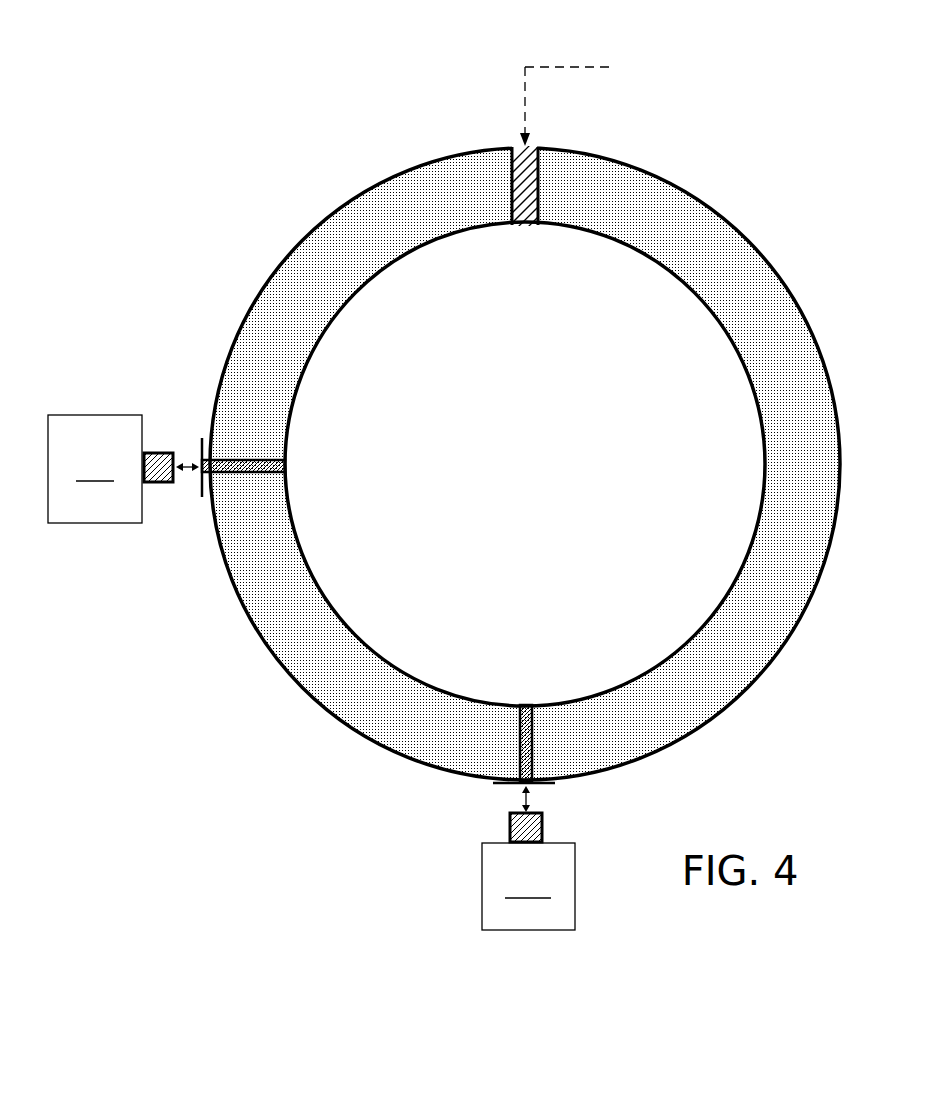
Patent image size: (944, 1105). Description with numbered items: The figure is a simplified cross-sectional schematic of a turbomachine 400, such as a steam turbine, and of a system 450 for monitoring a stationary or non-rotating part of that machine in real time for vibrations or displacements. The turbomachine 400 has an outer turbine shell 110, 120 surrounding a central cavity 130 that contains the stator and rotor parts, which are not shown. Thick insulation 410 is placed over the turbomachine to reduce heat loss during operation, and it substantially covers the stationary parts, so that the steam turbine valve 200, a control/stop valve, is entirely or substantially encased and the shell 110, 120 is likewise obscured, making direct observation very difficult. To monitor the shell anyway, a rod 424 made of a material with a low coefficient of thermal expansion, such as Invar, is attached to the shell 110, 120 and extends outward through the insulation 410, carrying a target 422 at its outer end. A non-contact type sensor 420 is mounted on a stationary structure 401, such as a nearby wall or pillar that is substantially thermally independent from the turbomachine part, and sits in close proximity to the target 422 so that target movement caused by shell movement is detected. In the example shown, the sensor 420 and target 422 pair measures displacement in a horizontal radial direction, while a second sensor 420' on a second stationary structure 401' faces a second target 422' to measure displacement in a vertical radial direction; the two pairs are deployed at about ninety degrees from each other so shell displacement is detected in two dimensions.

The turbomachine 400 is at (695, 123).
The insulation 410 is at (288, 290).
The turbine shell 110 is at (668, 268).
The turbine shell 120 is at (373, 655).
The central cavity 130 is at (505, 481).
The steam turbine valve 200 is at (507, 167).
The stationary structure 401 is at (95, 469).
The stationary structure 401' is at (528, 886).
The non-contact type sensor 420 is at (157, 426).
The non-contact type sensor 420' is at (569, 814).
The target 422 is at (170, 499).
The target 422' is at (489, 814).
The rod 424 is at (283, 460).
The system for monitoring a stationary or non-rotating part 450 is at (385, 872).